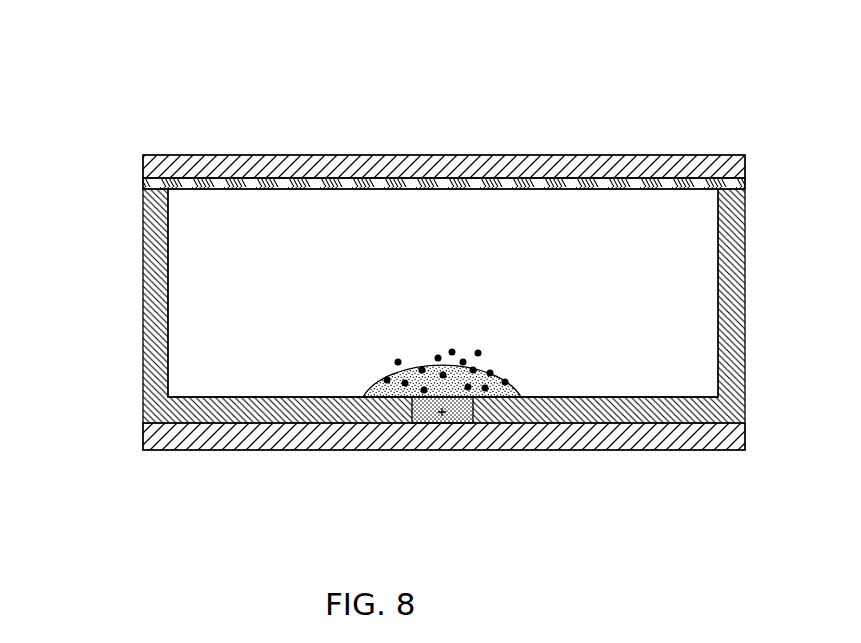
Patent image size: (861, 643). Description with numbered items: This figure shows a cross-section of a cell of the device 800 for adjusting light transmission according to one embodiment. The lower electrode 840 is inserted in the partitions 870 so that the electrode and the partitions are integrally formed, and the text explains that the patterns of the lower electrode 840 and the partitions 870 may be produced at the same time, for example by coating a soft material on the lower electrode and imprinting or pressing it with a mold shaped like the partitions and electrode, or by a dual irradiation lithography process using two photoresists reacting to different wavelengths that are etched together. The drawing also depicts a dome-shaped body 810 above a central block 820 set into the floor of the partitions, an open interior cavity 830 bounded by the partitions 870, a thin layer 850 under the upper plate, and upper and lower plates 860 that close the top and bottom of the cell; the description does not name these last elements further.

The device for adjusting light transmission 800 is at (88, 56).
The encapsulant with phosphor 810 is at (362, 400).
The light emitting diode chip 820 is at (396, 398).
The cavity 830 is at (210, 305).
The lower electrode 840 is at (466, 413).
The reflective layer 850 is at (148, 186).
The substrate plate 860 is at (143, 167).
The partitions 870 is at (153, 273).